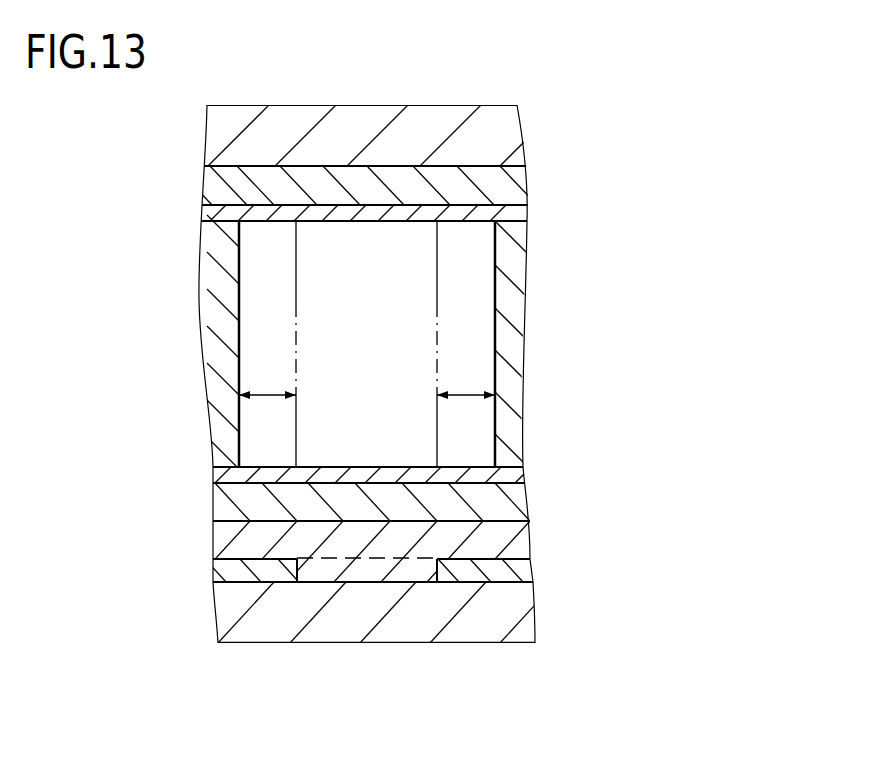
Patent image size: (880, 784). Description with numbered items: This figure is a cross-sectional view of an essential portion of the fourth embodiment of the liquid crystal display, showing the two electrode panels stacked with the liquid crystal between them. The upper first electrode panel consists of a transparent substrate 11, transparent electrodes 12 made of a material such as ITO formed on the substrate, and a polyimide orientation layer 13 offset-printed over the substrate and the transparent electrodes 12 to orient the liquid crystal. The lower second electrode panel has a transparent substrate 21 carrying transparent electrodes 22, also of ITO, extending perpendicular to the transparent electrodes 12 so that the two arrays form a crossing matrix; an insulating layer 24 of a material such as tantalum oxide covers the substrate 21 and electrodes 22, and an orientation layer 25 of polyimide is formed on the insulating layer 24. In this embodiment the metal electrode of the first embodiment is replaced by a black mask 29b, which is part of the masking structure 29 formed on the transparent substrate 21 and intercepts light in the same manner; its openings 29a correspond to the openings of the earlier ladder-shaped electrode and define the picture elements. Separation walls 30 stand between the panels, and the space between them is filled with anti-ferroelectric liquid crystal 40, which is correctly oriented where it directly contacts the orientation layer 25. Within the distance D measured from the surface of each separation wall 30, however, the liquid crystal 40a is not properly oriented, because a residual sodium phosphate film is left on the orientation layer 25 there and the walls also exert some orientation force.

The transparent substrate 11 is at (507, 140).
The transparent electrodes 12 is at (403, 182).
The orientation layer 13 is at (515, 212).
The separation wall 30 is at (217, 253).
The anti-ferroelectric liquid crystal 40 is at (420, 303).
The anti-ferroelectric liquid crystal 40a is at (245, 323).
The orientation layer 25 is at (515, 473).
The insulating layer 24 is at (517, 504).
The transparent electrodes 22 is at (512, 543).
The patterned layer 29 is at (533, 573).
The openings 29a is at (308, 560).
The black mask 29b is at (477, 575).
The transparent substrate 21 is at (523, 622).